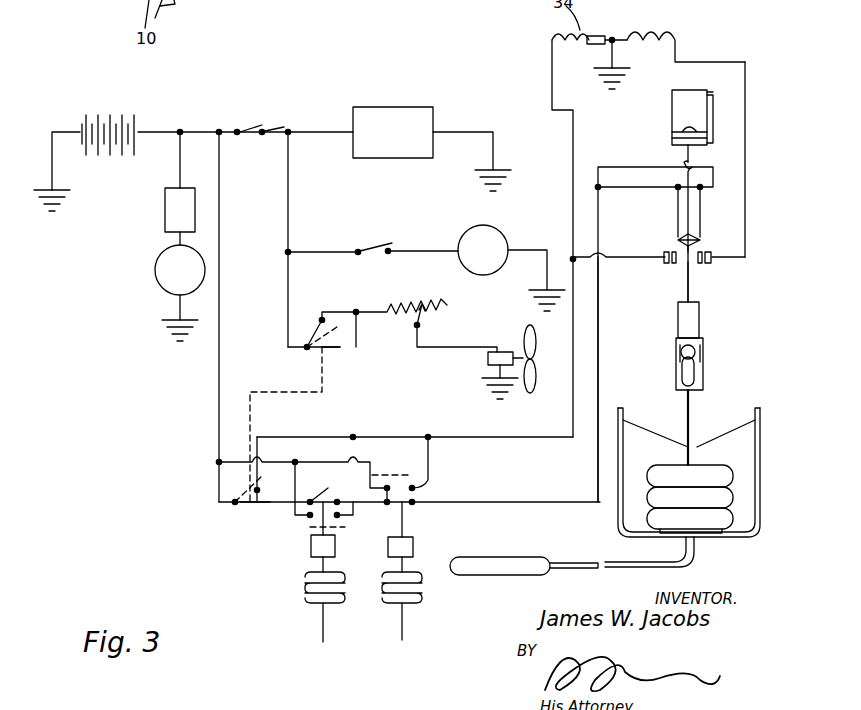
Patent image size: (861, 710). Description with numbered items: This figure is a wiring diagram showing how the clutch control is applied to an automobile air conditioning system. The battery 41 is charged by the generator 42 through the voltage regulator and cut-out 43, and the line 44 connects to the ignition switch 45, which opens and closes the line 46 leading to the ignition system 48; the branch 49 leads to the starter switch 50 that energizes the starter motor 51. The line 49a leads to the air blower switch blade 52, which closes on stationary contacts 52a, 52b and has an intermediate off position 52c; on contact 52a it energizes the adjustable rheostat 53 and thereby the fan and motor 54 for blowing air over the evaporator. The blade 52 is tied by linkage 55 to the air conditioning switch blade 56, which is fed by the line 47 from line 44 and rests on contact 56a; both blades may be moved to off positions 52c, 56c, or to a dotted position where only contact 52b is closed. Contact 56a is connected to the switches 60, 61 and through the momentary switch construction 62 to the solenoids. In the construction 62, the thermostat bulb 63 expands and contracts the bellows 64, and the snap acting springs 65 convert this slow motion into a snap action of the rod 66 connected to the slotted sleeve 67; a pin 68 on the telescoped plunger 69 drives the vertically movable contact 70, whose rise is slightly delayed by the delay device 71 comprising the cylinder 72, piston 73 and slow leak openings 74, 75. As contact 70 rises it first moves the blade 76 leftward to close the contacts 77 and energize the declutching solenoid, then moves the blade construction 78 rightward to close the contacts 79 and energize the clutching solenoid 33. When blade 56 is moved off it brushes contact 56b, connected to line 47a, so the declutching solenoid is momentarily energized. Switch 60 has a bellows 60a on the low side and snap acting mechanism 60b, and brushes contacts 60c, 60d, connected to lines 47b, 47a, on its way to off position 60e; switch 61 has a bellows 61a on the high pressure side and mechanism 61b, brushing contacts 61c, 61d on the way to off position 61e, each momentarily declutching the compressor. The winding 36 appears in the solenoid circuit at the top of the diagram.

The clutching solenoid 33 is at (662, 30).
The fuse 36 is at (600, 50).
The battery 41 is at (95, 115).
The generator 42 is at (160, 268).
The voltage regulator and cut-out 43 is at (172, 198).
The line 44 is at (200, 130).
The ignition switch 45 is at (250, 128).
The line 46 is at (278, 130).
The line 47 is at (224, 262).
The line 47a is at (370, 436).
The line 47b is at (284, 460).
The ignition system 48 is at (390, 110).
The branch 49 is at (292, 182).
The line 49a is at (290, 290).
The starter switch 50 is at (372, 246).
The starter motor 51 is at (462, 244).
The air blower switch blade 52 is at (330, 350).
The stationary contact 52a is at (335, 348).
The stationary contact 52b is at (320, 320).
The off position 52c is at (345, 330).
The adjustable rheostat 53 is at (405, 298).
The fan and motor 54 is at (505, 350).
The linkage 55 is at (300, 390).
The air conditioning switch blade 56 is at (235, 504).
The contact 56a is at (276, 528).
The contact 56b is at (256, 490).
The off position 56c is at (258, 480).
The switch 60 is at (320, 494).
The bellows 60a is at (305, 592).
The snap acting mechanism 60b is at (336, 546).
The contact 60c is at (308, 516).
The contact 60d is at (338, 516).
The off position 60e is at (310, 530).
The switch 61 is at (412, 506).
The bellows 61a is at (416, 594).
The snap acting mechanism 61b is at (414, 546).
The contact 61c is at (380, 468).
The contact 61d is at (420, 490).
The off position 61e is at (410, 474).
The momentary switch construction 62 is at (657, 306).
The thermostat bulb 63 is at (510, 558).
The bellows 64 is at (728, 478).
The snap acting springs 65 is at (640, 424).
The rod 66 is at (695, 428).
The slotted sleeve 67 is at (703, 372).
The pin 68 is at (696, 352).
The telescoped plunger 69 is at (700, 322).
The vertically movable contact 70 is at (700, 240).
The delay device 71 is at (705, 116).
The cylinder 72 is at (672, 98).
The piston 73 is at (685, 128).
The slow leak opening 74 is at (712, 92).
The slow leak opening 75 is at (710, 144).
The blade 76 is at (678, 240).
The contacts 77 is at (667, 265).
The blade construction 78 is at (694, 220).
The contacts 79 is at (710, 265).